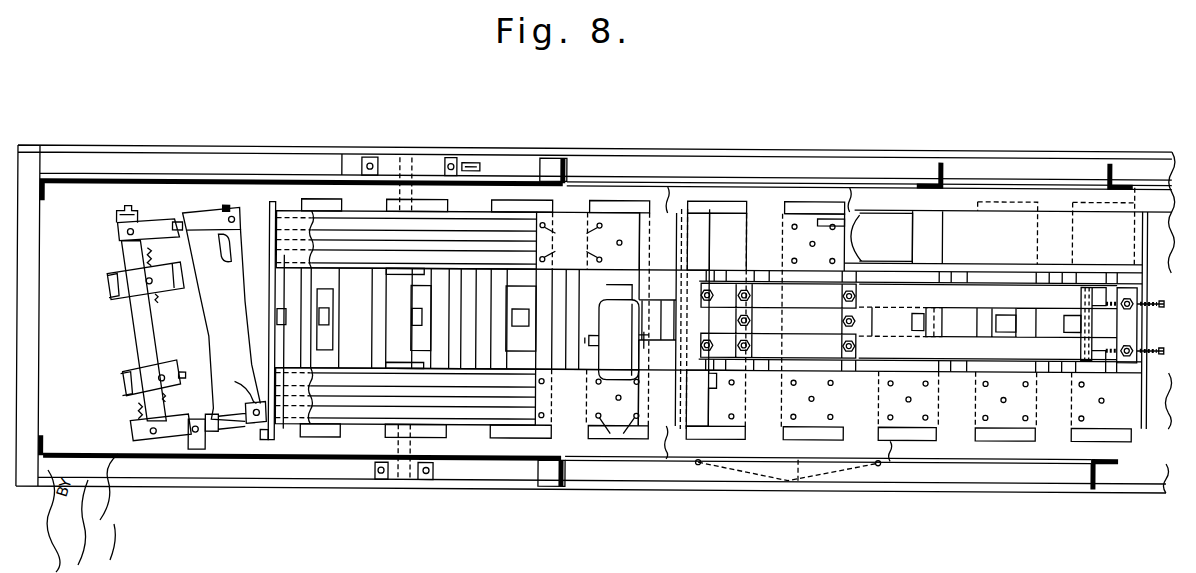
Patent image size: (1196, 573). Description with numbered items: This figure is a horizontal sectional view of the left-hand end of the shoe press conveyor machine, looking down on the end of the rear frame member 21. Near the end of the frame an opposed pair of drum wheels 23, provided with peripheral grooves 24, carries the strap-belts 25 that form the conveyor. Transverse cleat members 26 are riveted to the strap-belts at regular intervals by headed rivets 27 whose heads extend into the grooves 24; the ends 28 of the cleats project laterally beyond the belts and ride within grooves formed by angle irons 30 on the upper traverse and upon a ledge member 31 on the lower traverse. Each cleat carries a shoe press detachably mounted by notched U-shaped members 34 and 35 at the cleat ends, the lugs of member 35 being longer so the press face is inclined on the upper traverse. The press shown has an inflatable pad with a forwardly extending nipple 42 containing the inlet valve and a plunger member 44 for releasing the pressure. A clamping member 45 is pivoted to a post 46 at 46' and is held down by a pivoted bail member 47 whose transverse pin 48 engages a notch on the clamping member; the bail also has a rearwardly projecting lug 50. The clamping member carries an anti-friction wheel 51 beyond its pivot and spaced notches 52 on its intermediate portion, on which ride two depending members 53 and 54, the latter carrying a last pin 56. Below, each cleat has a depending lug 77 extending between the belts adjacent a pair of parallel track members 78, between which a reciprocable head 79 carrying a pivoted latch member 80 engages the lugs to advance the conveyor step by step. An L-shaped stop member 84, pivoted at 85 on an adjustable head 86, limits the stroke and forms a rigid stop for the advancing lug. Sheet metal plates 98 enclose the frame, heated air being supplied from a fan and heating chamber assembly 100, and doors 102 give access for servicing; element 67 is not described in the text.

The rear frame member 21 is at (1068, 191).
The drum wheels 23 is at (350, 210).
The peripheral grooves 24 is at (468, 260).
The strap-belt 25 is at (294, 214).
The transverse cleat members 26 is at (271, 276).
The headed rivets 27 is at (597, 224).
The cleat ends 28 is at (812, 196).
The angle irons 30 is at (762, 192).
The ledge member 31 is at (648, 186).
The notched U-shaped member 34 is at (266, 430).
The notched U-shaped member 35 is at (249, 215).
The forwardly extending nipple 42 is at (227, 204).
The plunger member 44 is at (258, 423).
The clamping member 45 is at (137, 319).
The post 46 is at (119, 236).
The pivot 46' is at (156, 209).
The pivoted bail member 47 is at (135, 423).
The transverse pin member 48 is at (152, 433).
The rearwardly projecting lug 50 is at (198, 448).
The anti-friction wheel 51 is at (116, 215).
The spaced notches 52 is at (157, 300).
The depending member 53 is at (108, 284).
The depending member 54 is at (148, 372).
The last pin 56 is at (183, 371).
The block 67 is at (1000, 222).
The downwardly depending lug 77 is at (278, 316).
The parallel track members 78 is at (888, 285).
The reciprocable head 79 is at (873, 329).
The pivoted latch member 80 is at (940, 314).
The L-shaped stop member 84 is at (1090, 313).
The pivot 85 is at (1085, 354).
The adjustable head 86 is at (1100, 350).
The sheet metal plates 98 is at (893, 174).
The fan and heating chamber assembly 100 is at (617, 362).
The doors 102 is at (818, 481).